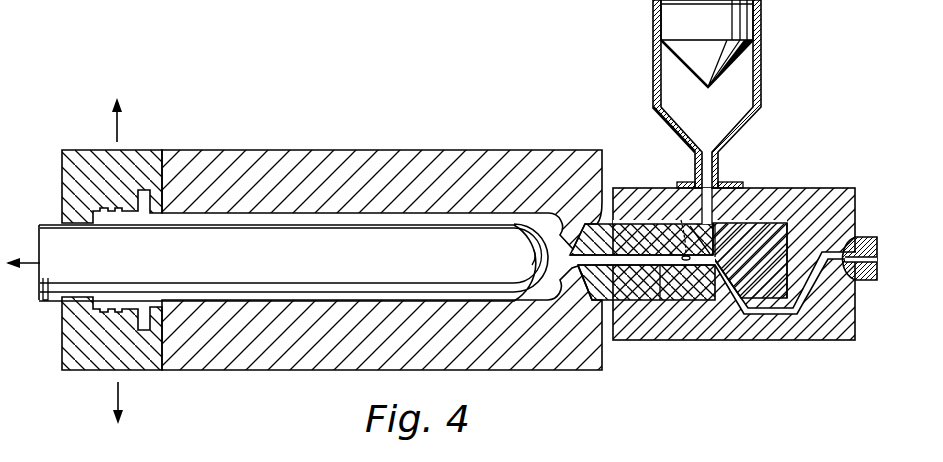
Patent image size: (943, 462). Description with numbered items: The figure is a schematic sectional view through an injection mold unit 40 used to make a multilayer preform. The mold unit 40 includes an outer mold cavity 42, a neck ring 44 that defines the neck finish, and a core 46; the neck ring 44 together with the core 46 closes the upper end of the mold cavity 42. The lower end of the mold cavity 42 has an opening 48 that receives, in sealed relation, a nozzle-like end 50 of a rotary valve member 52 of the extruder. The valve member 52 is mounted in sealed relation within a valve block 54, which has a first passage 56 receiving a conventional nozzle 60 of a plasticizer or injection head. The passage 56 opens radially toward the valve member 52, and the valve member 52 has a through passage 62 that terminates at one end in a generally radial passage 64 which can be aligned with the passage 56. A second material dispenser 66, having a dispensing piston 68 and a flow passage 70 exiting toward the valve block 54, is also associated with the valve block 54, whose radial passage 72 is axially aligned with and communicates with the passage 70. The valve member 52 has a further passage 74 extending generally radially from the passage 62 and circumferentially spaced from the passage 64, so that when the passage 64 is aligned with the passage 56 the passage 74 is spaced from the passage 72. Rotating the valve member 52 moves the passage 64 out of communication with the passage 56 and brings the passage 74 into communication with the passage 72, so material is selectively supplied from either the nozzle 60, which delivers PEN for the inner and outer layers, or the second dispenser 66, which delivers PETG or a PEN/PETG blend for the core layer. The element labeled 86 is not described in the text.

The injection mold unit 40 is at (390, 150).
The outer mold cavity 42 is at (429, 221).
The neck ring 44 is at (133, 151).
The core 46 is at (332, 273).
The opening 48 is at (563, 268).
The nozzle-like end 50 is at (580, 283).
The rotary valve member 52 is at (803, 189).
The valve block 54 is at (788, 222).
The first passage 56 is at (772, 316).
The nozzle 60 is at (870, 282).
The through passage 62 is at (663, 266).
The radial passage 64 is at (723, 277).
The second material dispenser 66 is at (762, 62).
The dispensing piston 68 is at (737, 25).
The flow passage 70 is at (721, 158).
The radial passage 72 is at (713, 205).
The further passage 74 is at (681, 220).
The melt chamber 86 is at (722, 98).